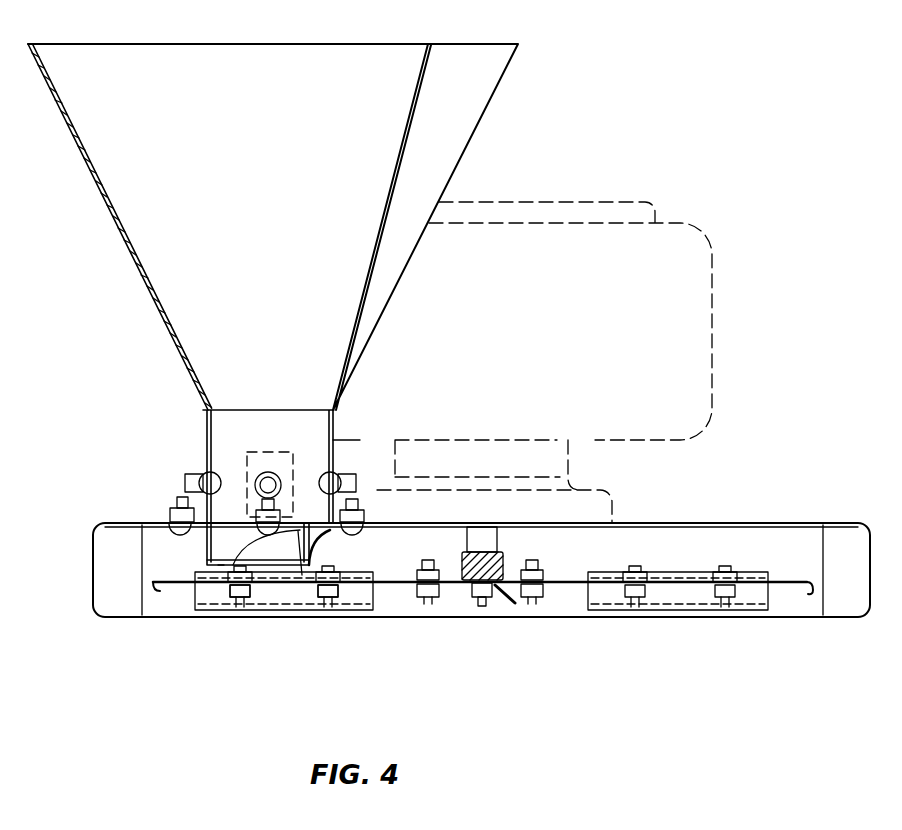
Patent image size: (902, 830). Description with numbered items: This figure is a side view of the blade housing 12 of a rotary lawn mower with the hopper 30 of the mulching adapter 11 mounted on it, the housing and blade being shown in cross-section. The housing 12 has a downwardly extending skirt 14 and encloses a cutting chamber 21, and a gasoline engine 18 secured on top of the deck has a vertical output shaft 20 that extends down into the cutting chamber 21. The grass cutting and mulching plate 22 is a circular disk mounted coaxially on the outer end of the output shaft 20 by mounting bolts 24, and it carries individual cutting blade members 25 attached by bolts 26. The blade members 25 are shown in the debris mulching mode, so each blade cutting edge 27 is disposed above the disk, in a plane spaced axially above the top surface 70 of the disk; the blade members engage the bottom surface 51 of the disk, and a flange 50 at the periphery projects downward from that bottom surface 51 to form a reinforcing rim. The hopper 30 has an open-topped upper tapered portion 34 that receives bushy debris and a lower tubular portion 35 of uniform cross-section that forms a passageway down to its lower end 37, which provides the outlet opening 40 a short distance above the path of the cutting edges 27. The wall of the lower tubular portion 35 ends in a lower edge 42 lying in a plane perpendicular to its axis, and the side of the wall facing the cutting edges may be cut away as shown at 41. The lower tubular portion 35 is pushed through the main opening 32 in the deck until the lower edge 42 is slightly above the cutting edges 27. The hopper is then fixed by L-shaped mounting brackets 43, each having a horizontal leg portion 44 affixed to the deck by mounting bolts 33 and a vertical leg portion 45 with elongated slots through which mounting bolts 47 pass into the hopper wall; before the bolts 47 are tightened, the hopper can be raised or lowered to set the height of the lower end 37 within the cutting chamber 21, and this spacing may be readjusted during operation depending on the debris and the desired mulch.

The mulching adapter 11 is at (106, 414).
The blade housing 12 is at (481, 523).
The skirt 14 is at (842, 533).
The gasoline engine 18 is at (683, 212).
The output shaft 20 is at (467, 540).
The cutting chamber 21 is at (748, 548).
The grass cutting and mulching plate 22 is at (511, 544).
The mounting bolts 24 is at (430, 594).
The cutting blade members 25 is at (262, 597).
The bolts 26 is at (240, 600).
The blade cutting edge 27 is at (692, 572).
The hopper 30 is at (297, 227).
The main opening 32 is at (208, 540).
The mounting bolts 33 is at (177, 501).
The upper tapered portion 34 is at (152, 302).
The lower tubular portion 35 is at (205, 450).
The lower end 37 is at (205, 565).
The outlet opening 40 is at (268, 553).
The cut away 41 is at (302, 575).
The lower edge 42 is at (220, 566).
The L-shaped mounting brackets 43 is at (258, 452).
The horizontal leg portion 44 is at (368, 522).
The vertical leg portion 45 is at (335, 467).
The mounting bolts 47 is at (275, 470).
The flange 50 is at (817, 592).
The bottom surface 51 is at (786, 583).
The top surface 70 is at (793, 580).